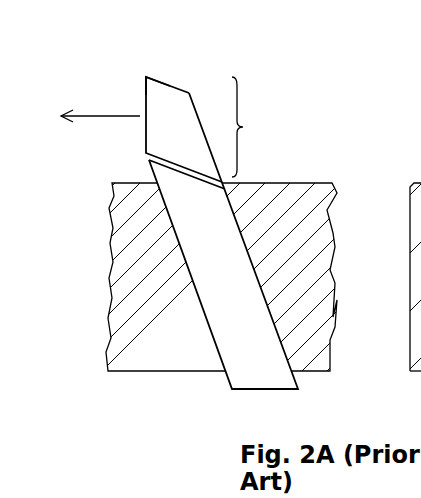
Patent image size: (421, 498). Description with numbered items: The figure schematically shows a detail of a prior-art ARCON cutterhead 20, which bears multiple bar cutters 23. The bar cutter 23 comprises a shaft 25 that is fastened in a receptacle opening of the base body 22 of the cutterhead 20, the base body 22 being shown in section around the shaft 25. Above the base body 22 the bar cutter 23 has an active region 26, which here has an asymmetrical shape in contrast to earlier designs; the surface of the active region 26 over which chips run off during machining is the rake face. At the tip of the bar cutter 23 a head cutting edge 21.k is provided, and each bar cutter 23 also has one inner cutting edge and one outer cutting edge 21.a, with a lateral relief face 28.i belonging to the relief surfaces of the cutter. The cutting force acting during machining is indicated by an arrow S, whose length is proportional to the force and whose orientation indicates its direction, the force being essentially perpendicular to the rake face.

The cutterhead 20 is at (70, 100).
The head cutting edge 21.k is at (146, 77).
The outer cutting edge 21.a is at (398, 240).
The base body 22 is at (290, 200).
The bar cutter 23 is at (203, 86).
The shaft 25 is at (255, 350).
The active region 26 is at (256, 127).
The lateral relief face 28.i is at (173, 491).